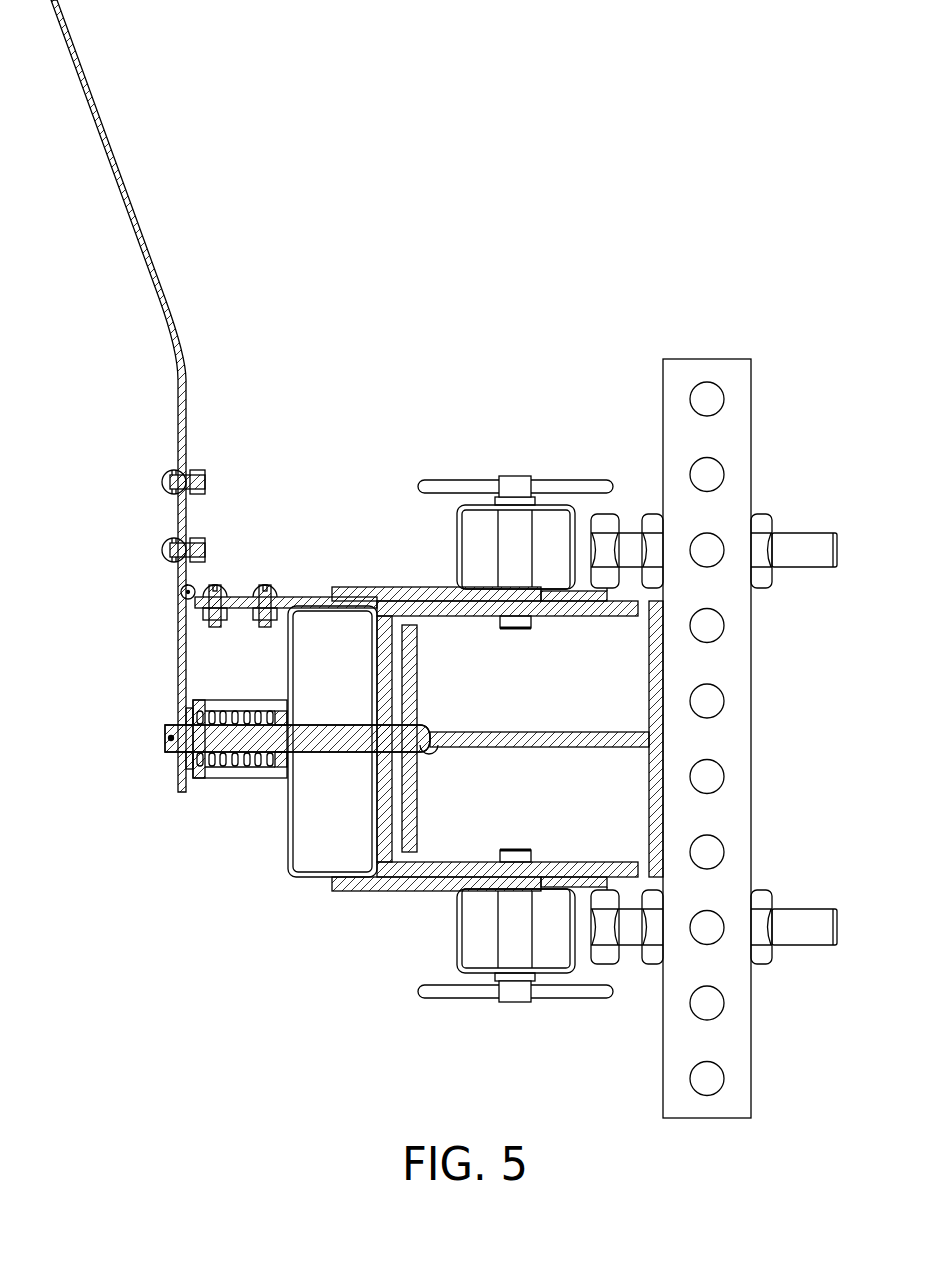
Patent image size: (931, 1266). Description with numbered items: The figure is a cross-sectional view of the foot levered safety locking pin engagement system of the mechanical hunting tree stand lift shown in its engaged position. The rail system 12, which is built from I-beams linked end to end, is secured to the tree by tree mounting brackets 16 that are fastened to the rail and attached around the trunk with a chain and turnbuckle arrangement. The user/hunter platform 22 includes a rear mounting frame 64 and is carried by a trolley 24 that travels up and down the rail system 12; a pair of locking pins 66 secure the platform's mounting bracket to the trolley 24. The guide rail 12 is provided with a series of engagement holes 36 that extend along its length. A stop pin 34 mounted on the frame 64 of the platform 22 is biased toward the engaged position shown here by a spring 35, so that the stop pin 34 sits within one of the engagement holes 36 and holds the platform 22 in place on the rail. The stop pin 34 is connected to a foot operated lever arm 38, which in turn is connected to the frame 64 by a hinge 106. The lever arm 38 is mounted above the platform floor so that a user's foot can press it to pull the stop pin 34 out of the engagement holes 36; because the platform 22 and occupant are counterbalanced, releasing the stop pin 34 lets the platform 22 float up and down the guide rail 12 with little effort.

The rail system 12 is at (534, 738).
The tree mounting bracket 16 is at (737, 434).
The platform 22 is at (470, 346).
The trolley 24 is at (452, 608).
The stop pin 34 is at (249, 744).
The spring 35 is at (257, 765).
The engagement holes 36 is at (436, 742).
The foot operated lever arm 38 is at (126, 198).
The rear mounting frame 64 is at (311, 878).
The locking pins 66 is at (514, 487).
The hinge 106 is at (186, 580).